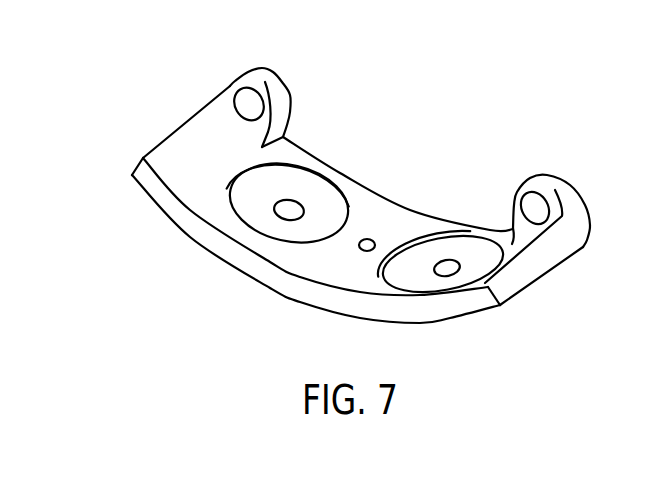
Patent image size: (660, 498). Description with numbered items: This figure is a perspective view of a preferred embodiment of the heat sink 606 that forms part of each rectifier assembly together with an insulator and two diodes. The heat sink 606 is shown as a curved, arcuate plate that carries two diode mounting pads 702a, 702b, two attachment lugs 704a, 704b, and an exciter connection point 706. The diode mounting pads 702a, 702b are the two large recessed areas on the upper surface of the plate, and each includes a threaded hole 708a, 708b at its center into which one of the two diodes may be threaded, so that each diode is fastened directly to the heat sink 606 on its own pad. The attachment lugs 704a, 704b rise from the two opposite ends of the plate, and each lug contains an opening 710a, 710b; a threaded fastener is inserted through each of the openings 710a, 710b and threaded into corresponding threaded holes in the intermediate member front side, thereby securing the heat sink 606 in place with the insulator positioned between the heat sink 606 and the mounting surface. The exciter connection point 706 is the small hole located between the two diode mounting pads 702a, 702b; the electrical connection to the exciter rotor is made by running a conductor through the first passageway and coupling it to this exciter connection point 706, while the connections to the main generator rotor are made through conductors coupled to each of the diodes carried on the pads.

The heat sink 606 is at (440, 142).
The diode mounting pad 702a is at (310, 190).
The diode mounting pad 702b is at (467, 247).
The attachment lug 704a is at (267, 80).
The attachment lug 704b is at (553, 185).
The exciter connection point 706 is at (367, 238).
The threaded hole 708a is at (290, 212).
The threaded hole 708b is at (447, 272).
The opening 710a is at (249, 104).
The opening 710b is at (535, 208).